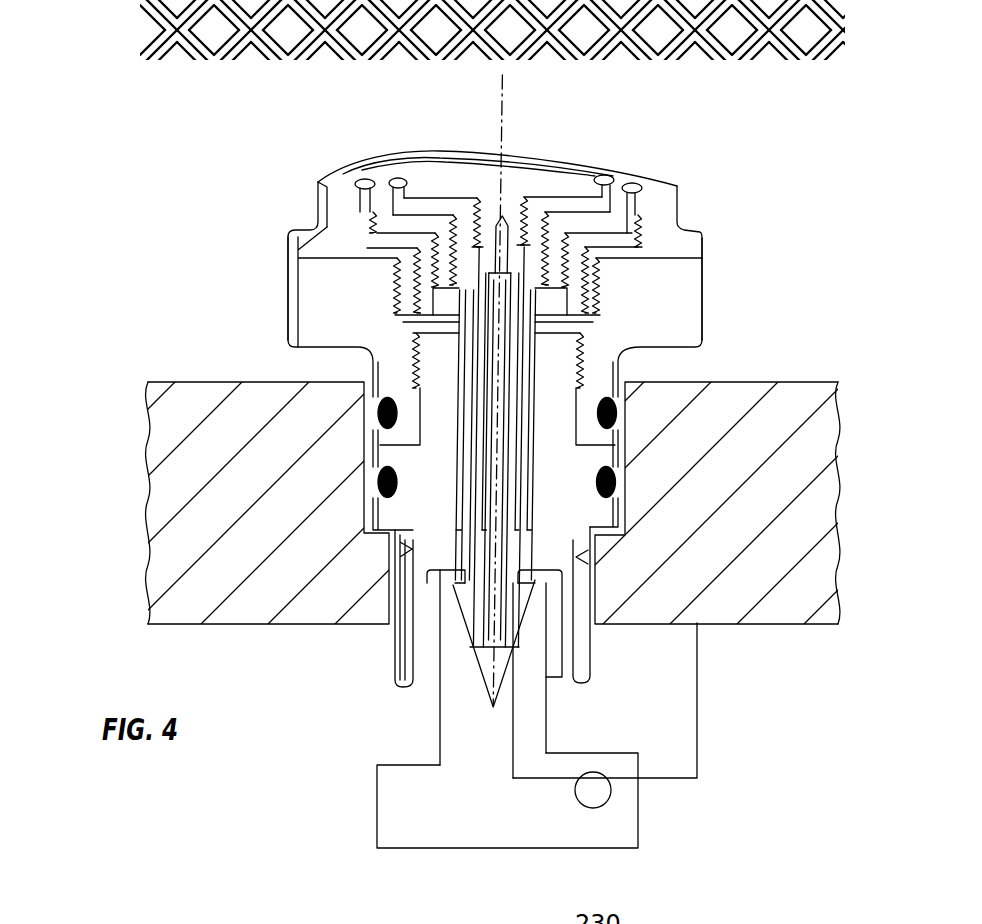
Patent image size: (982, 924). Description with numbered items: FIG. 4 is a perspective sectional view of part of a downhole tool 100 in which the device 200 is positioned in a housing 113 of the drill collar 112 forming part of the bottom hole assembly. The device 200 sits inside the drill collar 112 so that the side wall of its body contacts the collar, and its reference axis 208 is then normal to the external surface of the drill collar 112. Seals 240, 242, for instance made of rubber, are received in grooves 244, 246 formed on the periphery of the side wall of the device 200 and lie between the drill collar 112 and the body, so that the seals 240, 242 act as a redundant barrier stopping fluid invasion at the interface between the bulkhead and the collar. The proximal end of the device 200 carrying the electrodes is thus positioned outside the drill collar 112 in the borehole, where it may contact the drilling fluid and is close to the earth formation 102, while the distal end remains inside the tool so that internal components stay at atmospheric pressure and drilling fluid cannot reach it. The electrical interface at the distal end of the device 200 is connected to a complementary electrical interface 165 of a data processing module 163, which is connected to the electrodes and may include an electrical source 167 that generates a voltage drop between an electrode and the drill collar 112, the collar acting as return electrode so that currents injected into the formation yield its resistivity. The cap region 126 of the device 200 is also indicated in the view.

The earth formation 102 is at (130, 38).
The reference axis 208 is at (502, 128).
The device 200 is at (722, 183).
The cap body 126 is at (230, 217).
The connector assembly 100 is at (728, 301).
The drill collar 112 is at (738, 380).
The seal 240 is at (381, 408).
The seal 242 is at (380, 484).
The groove 244 is at (593, 412).
The groove 246 is at (515, 617).
The housing 113 is at (393, 630).
The complementary electrical interface 165 is at (524, 695).
The data processing module 163 is at (491, 823).
The electrical source 167 is at (604, 804).